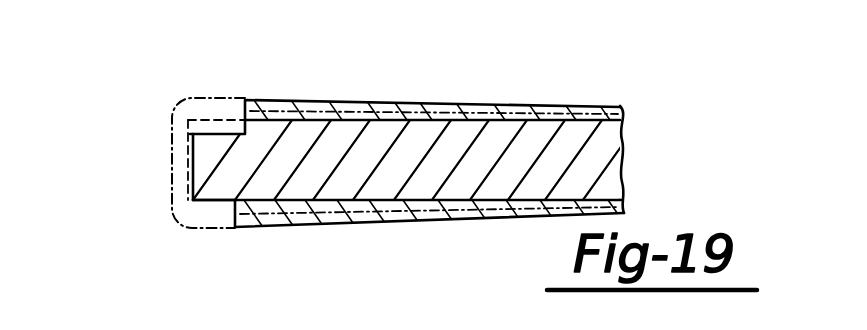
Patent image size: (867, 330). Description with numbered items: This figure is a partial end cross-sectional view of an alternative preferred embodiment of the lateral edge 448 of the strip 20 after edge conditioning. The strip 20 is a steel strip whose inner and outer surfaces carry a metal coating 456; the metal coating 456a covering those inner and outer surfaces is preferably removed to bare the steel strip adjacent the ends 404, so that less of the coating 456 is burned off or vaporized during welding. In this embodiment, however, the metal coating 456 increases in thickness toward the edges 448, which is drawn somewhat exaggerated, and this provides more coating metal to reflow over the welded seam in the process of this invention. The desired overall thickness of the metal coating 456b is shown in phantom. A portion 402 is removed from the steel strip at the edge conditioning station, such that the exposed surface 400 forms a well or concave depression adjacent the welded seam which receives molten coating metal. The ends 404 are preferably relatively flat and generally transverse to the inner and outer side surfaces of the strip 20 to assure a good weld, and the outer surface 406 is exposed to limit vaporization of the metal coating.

The strip 20 is at (478, 163).
The exposed surface 400 is at (223, 134).
The removed portion 402 is at (201, 128).
The ends 404 is at (191, 161).
The outer surface 406 is at (207, 203).
The lateral edge 448 is at (128, 111).
The metal coating 456 is at (397, 213).
The metal coating covering the inner and outer surfaces 456a is at (181, 169).
The desired overall thickness of the metal coating 456b is at (342, 217).